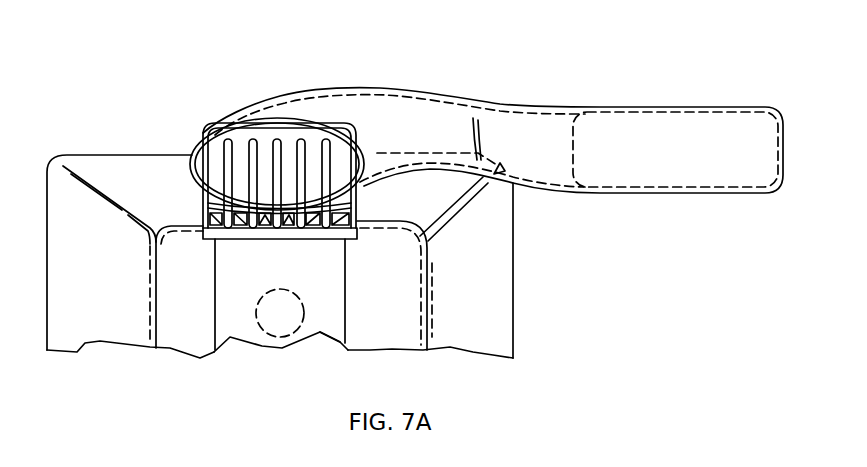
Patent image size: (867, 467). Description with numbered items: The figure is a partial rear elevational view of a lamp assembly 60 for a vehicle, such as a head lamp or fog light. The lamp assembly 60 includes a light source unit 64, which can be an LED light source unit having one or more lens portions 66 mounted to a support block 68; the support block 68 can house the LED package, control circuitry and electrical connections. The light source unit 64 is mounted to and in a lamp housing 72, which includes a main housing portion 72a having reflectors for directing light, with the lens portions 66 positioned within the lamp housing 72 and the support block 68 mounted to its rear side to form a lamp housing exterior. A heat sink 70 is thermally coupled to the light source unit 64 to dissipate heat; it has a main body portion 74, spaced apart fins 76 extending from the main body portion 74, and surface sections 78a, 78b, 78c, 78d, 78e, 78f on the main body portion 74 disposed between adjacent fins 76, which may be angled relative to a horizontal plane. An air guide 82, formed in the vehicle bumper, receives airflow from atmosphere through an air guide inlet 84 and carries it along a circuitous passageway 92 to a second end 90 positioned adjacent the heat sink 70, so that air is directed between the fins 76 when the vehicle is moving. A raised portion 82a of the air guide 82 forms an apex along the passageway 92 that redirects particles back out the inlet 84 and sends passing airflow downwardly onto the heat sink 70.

The lamp assembly 60 is at (127, 115).
The light source unit 64 is at (346, 296).
The lens portions 66 is at (265, 327).
The support block 68 is at (322, 320).
The heat sink 70 is at (327, 134).
The lamp housing 72 is at (100, 314).
The main housing portion 72a is at (493, 298).
The main body portion 74 is at (243, 235).
The fins 76 is at (252, 134).
The surface section 78a is at (217, 218).
The surface section 78b is at (243, 217).
The surface section 78c is at (264, 226).
The surface section 78d is at (288, 226).
The surface section 78e is at (312, 222).
The surface section 78f is at (338, 222).
The air guide 82 is at (537, 106).
The raised portion 82a is at (437, 170).
The air guide inlet 84 is at (713, 130).
The second end 90 is at (308, 124).
The passageway 92 is at (288, 138).